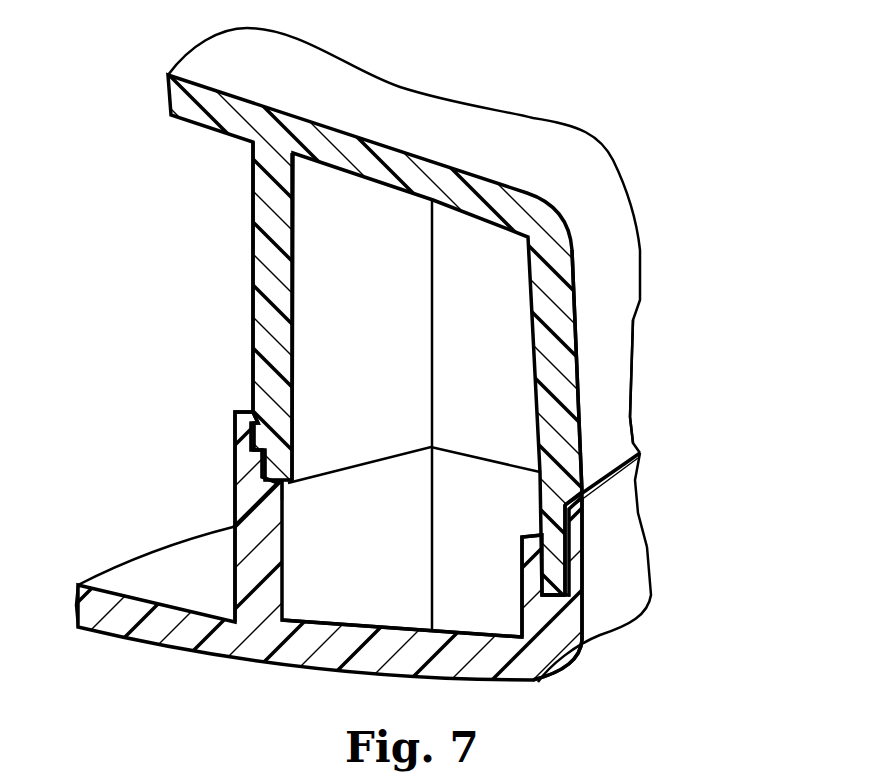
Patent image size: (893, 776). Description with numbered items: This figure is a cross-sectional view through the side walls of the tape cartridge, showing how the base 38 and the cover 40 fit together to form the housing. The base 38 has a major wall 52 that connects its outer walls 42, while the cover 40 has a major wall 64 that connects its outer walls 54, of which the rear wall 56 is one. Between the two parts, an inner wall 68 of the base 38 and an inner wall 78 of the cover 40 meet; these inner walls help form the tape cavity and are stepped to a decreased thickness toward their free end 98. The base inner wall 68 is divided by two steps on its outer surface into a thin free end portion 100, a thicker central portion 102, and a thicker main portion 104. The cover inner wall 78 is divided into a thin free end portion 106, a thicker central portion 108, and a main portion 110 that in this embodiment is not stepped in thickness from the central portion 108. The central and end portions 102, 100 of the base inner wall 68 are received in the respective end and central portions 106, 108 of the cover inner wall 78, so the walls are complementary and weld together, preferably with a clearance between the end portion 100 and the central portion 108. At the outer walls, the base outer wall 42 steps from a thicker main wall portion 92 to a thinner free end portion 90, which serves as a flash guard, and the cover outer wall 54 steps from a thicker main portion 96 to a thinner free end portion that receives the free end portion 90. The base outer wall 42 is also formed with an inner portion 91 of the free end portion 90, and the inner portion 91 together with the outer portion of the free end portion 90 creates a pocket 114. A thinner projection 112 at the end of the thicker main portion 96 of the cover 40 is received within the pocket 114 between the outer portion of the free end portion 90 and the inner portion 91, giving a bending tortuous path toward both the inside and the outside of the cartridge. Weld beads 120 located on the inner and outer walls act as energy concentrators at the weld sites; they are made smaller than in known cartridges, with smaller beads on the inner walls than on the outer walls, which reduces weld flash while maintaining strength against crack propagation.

The base 38 is at (612, 640).
The cover 40 is at (648, 326).
The outer walls 42 is at (640, 480).
The major wall 52 is at (128, 573).
The outer walls 54 is at (562, 362).
The rear wall 56 is at (613, 418).
The major wall 64 is at (458, 112).
The inner walls 68 is at (248, 558).
The inner walls 78 is at (270, 265).
The free end portion 90 is at (577, 528).
The inner portion 91 is at (530, 548).
The main wall portion 92 is at (556, 612).
The main portion 96 is at (540, 483).
The free end 98 is at (247, 407).
The free end portion 100 is at (237, 415).
The central portion 102 is at (247, 467).
The main portion 104 is at (252, 498).
The free end portion 106 is at (287, 467).
The central portion 108 is at (267, 433).
The main portion 110 is at (277, 383).
The projection 112 is at (553, 567).
The pocket 114 is at (545, 583).
The weld beads 120 is at (277, 483).